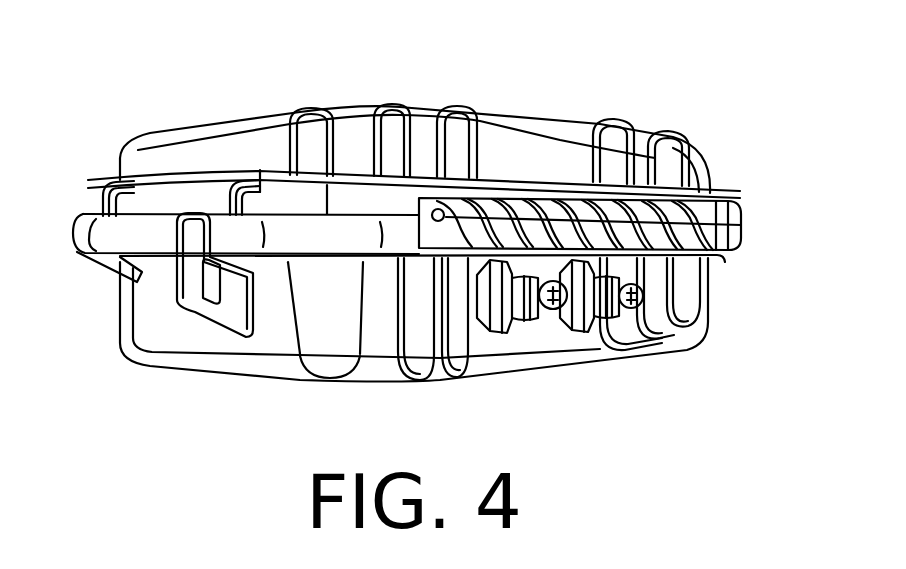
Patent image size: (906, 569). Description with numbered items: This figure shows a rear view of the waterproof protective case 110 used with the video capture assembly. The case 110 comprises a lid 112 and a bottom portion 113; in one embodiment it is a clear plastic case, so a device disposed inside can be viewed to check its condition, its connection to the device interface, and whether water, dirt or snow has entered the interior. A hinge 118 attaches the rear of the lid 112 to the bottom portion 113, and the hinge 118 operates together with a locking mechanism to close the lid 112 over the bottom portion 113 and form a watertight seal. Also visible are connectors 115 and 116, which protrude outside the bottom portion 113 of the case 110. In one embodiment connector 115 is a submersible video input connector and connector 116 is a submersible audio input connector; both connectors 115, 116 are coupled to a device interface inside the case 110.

The waterproof protective case 110 is at (672, 70).
The lid 112 is at (162, 129).
The bottom portion 113 is at (163, 366).
The submersible video input connector 115 is at (553, 313).
The submersible audio input connector 116 is at (623, 320).
The hinge 118 is at (710, 197).